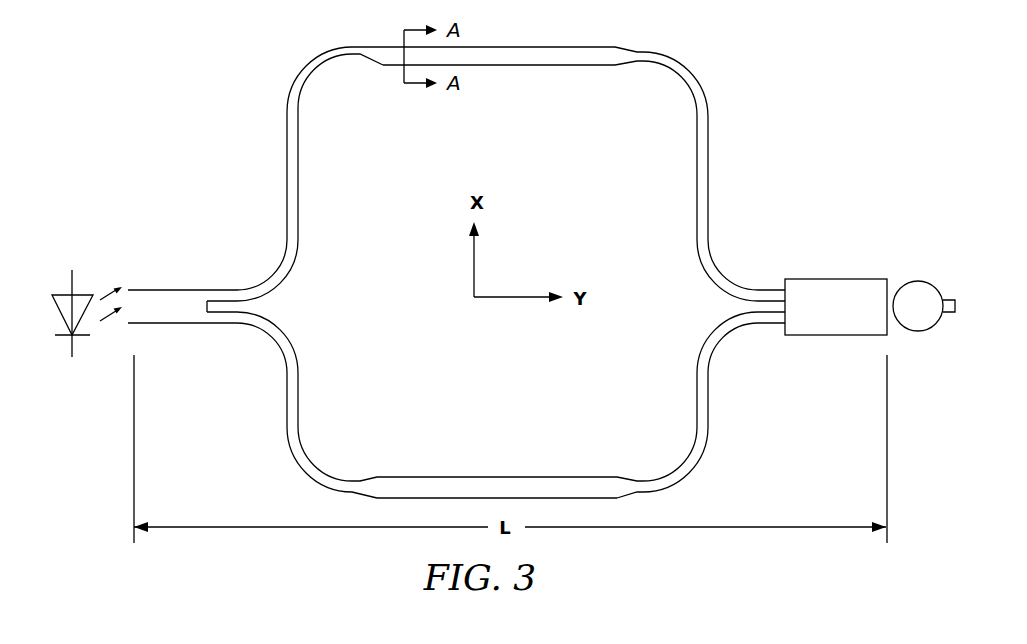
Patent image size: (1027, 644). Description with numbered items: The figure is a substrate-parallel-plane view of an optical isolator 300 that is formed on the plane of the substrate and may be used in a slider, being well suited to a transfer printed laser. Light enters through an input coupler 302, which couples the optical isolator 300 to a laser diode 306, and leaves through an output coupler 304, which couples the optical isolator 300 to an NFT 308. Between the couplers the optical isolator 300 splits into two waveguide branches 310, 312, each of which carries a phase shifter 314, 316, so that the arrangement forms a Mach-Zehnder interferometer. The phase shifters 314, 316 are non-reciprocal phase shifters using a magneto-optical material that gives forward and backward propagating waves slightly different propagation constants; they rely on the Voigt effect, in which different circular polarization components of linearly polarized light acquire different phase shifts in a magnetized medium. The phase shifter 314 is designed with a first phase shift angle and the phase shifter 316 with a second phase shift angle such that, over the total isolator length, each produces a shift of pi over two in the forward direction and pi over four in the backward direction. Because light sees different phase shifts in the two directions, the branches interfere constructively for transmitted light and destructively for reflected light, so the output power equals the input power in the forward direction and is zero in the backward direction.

The optical isolator 300 is at (208, 78).
The input coupler 302 is at (173, 292).
The output coupler 304 is at (818, 283).
The laser diode 306 is at (58, 290).
The NFT 308 is at (907, 282).
The waveguide branch 310 is at (250, 186).
The waveguide branch 312 is at (248, 397).
The phase shifter 314 is at (572, 67).
The phase shifter 316 is at (563, 476).